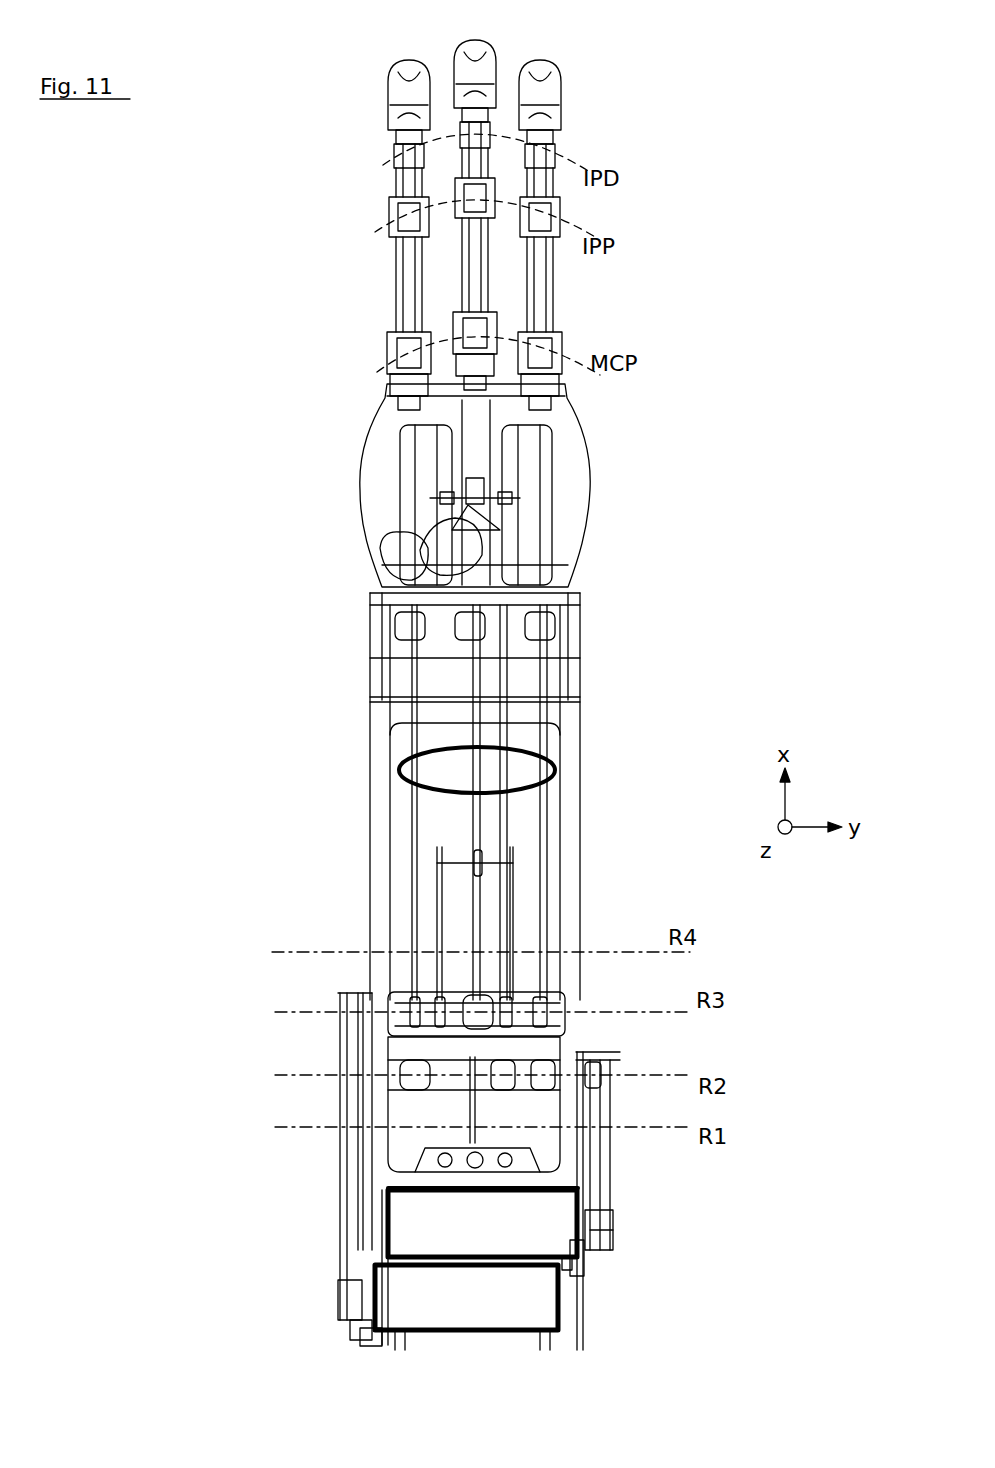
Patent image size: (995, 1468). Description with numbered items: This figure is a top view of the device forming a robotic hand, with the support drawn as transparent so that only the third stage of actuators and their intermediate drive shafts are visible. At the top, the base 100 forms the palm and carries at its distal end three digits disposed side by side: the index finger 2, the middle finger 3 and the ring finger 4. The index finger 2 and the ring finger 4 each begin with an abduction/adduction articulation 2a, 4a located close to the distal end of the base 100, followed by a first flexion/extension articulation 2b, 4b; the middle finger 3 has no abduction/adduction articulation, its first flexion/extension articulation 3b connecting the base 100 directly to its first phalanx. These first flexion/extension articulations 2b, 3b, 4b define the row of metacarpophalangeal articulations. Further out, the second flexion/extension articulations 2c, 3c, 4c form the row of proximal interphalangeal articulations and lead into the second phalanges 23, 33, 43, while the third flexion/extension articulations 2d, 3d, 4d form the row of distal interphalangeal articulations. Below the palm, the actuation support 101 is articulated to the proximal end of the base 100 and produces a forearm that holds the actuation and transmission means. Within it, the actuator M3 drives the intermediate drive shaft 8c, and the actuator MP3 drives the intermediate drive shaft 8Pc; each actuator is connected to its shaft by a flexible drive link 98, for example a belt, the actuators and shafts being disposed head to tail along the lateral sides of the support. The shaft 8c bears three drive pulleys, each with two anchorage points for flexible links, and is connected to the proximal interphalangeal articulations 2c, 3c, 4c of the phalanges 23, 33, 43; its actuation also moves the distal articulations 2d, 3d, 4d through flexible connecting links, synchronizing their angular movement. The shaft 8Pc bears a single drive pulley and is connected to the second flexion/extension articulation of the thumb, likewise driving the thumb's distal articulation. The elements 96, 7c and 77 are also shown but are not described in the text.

The index finger 2 is at (358, 101).
The abduction/adduction articulation of the index finger 2a is at (406, 376).
The first flexion/extension articulation of the index finger 2b is at (402, 346).
The second flexion/extension articulation of the index finger 2c is at (398, 212).
The third flexion/extension articulation of the index finger 2d is at (402, 140).
The second phalanx of the index finger 23 is at (398, 180).
The middle finger 3 is at (452, 69).
The first flexion/extension articulation of the middle finger 3b is at (484, 334).
The second flexion/extension articulation of the middle finger 3c is at (486, 204).
The third flexion/extension articulation of the middle finger 3d is at (480, 124).
The second phalanx of the middle finger 33 is at (476, 180).
The ring finger 4 is at (614, 111).
The abduction/adduction articulation of the ring finger 4a is at (544, 376).
The first flexion/extension articulation of the ring finger 4b is at (548, 346).
The second flexion/extension articulation of the ring finger 4c is at (560, 212).
The third flexion/extension articulation of the ring finger 4d is at (552, 138).
The second phalanx of the ring finger 43 is at (556, 186).
The base 100 is at (584, 458).
The actuation support 101 is at (580, 816).
The ring member 96 is at (400, 772).
The intermediate drive shaft 8Pc is at (400, 1010).
The intermediate drive shaft 8c is at (565, 1078).
The flexible drive link 98 is at (346, 1190).
The output gear 7c is at (565, 1252).
The actuator M3 is at (522, 1258).
The coupling 77 is at (412, 1312).
The actuator MP3 is at (424, 1292).